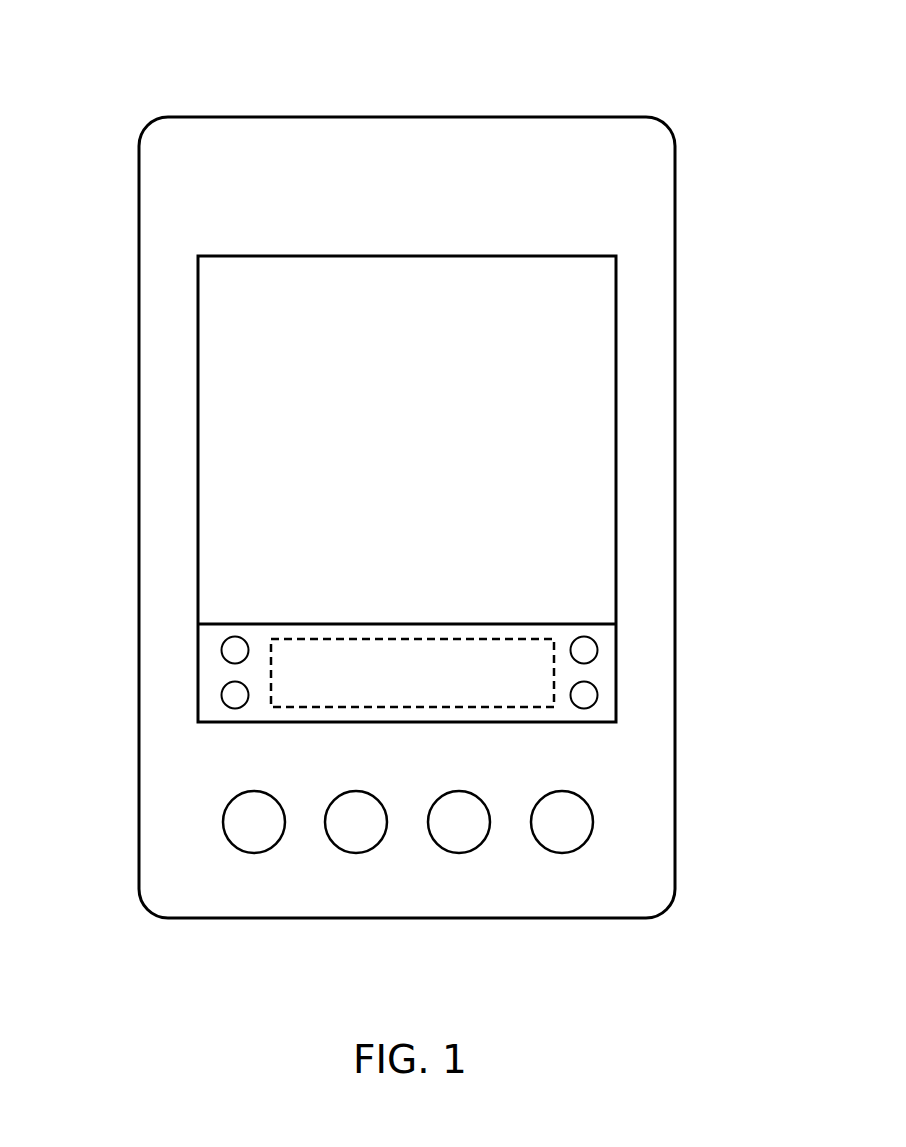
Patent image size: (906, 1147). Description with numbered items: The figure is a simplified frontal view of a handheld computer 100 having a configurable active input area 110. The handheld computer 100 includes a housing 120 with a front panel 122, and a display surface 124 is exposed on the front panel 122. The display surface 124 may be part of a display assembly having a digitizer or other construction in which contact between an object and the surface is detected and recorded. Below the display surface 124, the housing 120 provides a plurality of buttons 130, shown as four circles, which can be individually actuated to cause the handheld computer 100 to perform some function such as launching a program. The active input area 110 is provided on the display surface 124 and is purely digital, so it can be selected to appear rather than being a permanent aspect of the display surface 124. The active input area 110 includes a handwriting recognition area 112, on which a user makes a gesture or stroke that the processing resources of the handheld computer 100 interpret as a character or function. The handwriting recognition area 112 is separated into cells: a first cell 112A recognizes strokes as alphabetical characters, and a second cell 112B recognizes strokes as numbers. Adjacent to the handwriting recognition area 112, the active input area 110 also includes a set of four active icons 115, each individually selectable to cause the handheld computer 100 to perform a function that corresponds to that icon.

The handheld computer 100 is at (343, 56).
The housing 120 is at (466, 113).
The front panel 122 is at (435, 204).
The display surface 124 is at (505, 537).
The active input area 110 is at (375, 622).
The handwriting recognition area 112 is at (439, 695).
The first cell 112A is at (346, 672).
The second cell 112B is at (545, 670).
The active icons 115 is at (221, 650).
The buttons 130 is at (356, 853).